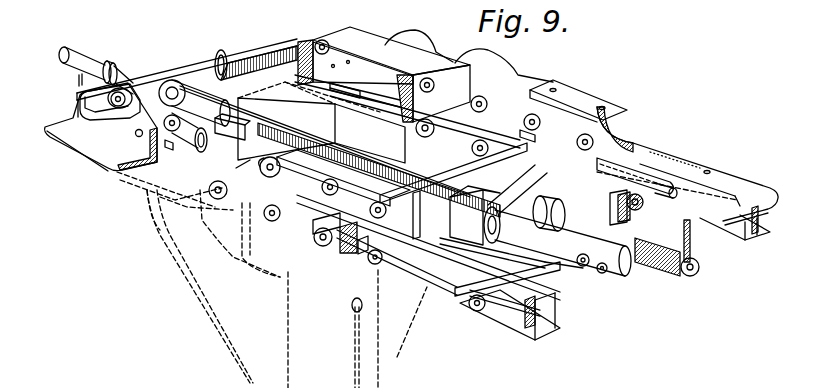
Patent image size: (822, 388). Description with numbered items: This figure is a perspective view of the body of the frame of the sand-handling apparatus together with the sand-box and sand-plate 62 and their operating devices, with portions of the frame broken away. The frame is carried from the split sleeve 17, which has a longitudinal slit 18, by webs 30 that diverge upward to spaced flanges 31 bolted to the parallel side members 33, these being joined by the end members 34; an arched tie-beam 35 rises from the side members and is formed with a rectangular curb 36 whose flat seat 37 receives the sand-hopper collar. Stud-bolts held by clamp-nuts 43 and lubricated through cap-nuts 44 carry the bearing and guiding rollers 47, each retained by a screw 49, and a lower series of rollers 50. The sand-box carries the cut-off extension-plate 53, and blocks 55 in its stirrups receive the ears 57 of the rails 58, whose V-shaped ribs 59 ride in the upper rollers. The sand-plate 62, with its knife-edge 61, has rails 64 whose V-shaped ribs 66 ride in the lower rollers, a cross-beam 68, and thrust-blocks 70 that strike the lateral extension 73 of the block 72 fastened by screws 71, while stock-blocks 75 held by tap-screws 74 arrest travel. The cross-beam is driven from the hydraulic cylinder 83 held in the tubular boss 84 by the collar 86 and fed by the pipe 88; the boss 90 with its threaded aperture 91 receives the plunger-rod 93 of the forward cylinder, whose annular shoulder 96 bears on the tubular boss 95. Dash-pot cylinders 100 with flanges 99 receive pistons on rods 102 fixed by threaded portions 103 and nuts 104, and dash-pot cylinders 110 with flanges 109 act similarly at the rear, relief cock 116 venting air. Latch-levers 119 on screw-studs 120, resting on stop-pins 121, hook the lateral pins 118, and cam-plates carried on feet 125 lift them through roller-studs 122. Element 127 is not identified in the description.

The split sleeve 17 is at (287, 357).
The longitudinal slit 18 is at (354, 365).
The webs 30 is at (200, 297).
The spaced flanges 31 is at (131, 188).
The side members 33 is at (108, 130).
The end members 34 is at (204, 60).
The arched tie-beam 35 is at (236, 171).
The rectangular curb 36 is at (384, 74).
The flat seat 37 is at (370, 31).
The clamp-nut 43 is at (85, 91).
The cap-nut 44 is at (87, 121).
The bearing and guiding roller 47 is at (130, 105).
The screw 49 is at (421, 135).
The guiding and supporting rollers 50 is at (210, 193).
The cut-off extension-plate 53 is at (327, 108).
The blocks 55 is at (287, 107).
The ears 57 is at (228, 121).
The rails 58 is at (351, 164).
The V-shaped ribs 59 is at (262, 173).
The knife-edge 61 is at (313, 228).
The sand-plate 62 is at (722, 268).
The rails 64 is at (740, 256).
The V-shaped rib 66 is at (755, 237).
The cross-beam 68 is at (451, 181).
The thrust-blocks 70 is at (305, 184).
The screws 71 is at (362, 254).
The block 72 is at (370, 205).
The lateral extension 73 is at (303, 204).
The tap-screws 74 is at (137, 134).
The stock-block 75 is at (167, 150).
The hydraulic cylinder 83 is at (78, 52).
The tubular boss 84 is at (136, 68).
The collar 86 is at (113, 68).
The pipe 88 is at (78, 80).
The boss 90 is at (518, 187).
The threaded aperture 91 is at (563, 243).
The plunger-rod 93 is at (533, 210).
The tubular boss 95 is at (689, 278).
The annular shoulder 96 is at (643, 271).
The flanges 99 is at (475, 215).
The dash-pot cylinders 100 is at (527, 268).
The rods 102 is at (581, 266).
The threaded portions 103 is at (592, 274).
The nuts 104 is at (605, 275).
The flanges 109 is at (214, 70).
The dash-pot cylinders 110 is at (196, 152).
The relief cock 116 is at (500, 264).
The lateral pins 118 is at (434, 238).
The latch-levers 119 is at (633, 171).
The screw-studs 120 is at (677, 193).
The stop-pins 121 is at (644, 202).
The roller-studs 122 is at (608, 208).
The feet 125 is at (517, 311).
The plate end 127 is at (585, 101).